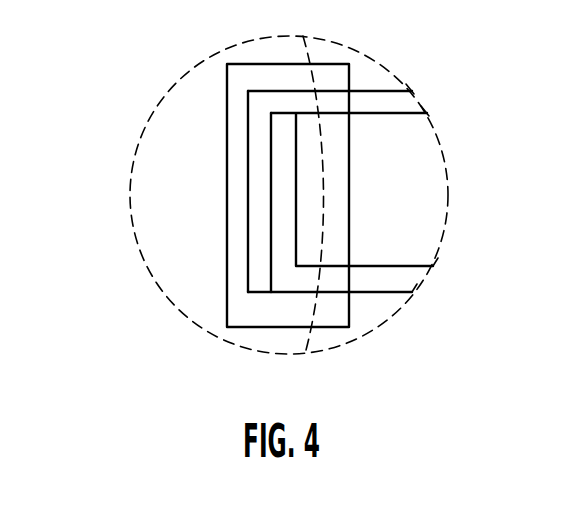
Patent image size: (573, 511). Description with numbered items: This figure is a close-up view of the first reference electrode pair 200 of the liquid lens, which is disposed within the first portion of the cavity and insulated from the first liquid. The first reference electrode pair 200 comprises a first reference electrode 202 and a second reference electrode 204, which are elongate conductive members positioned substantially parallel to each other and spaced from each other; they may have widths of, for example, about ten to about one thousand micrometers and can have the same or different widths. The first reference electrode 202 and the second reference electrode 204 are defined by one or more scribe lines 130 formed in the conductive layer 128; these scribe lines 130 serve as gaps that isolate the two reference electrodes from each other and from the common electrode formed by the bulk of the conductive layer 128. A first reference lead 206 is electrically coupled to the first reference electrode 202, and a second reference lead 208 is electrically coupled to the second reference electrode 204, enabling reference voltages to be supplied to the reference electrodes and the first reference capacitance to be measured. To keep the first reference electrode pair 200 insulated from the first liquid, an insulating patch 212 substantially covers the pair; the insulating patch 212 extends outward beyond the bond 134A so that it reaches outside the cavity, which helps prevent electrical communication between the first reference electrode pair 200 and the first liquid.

The conductive layer 128 is at (198, 301).
The scribe line 130 is at (248, 253).
The bond 134A is at (307, 53).
The first reference electrode pair 200 is at (238, 109).
The first reference electrode 202 is at (287, 159).
The second reference electrode 204 is at (262, 213).
The first reference lead 206 is at (383, 322).
The second reference lead 208 is at (384, 102).
The insulating patch 212 is at (335, 157).